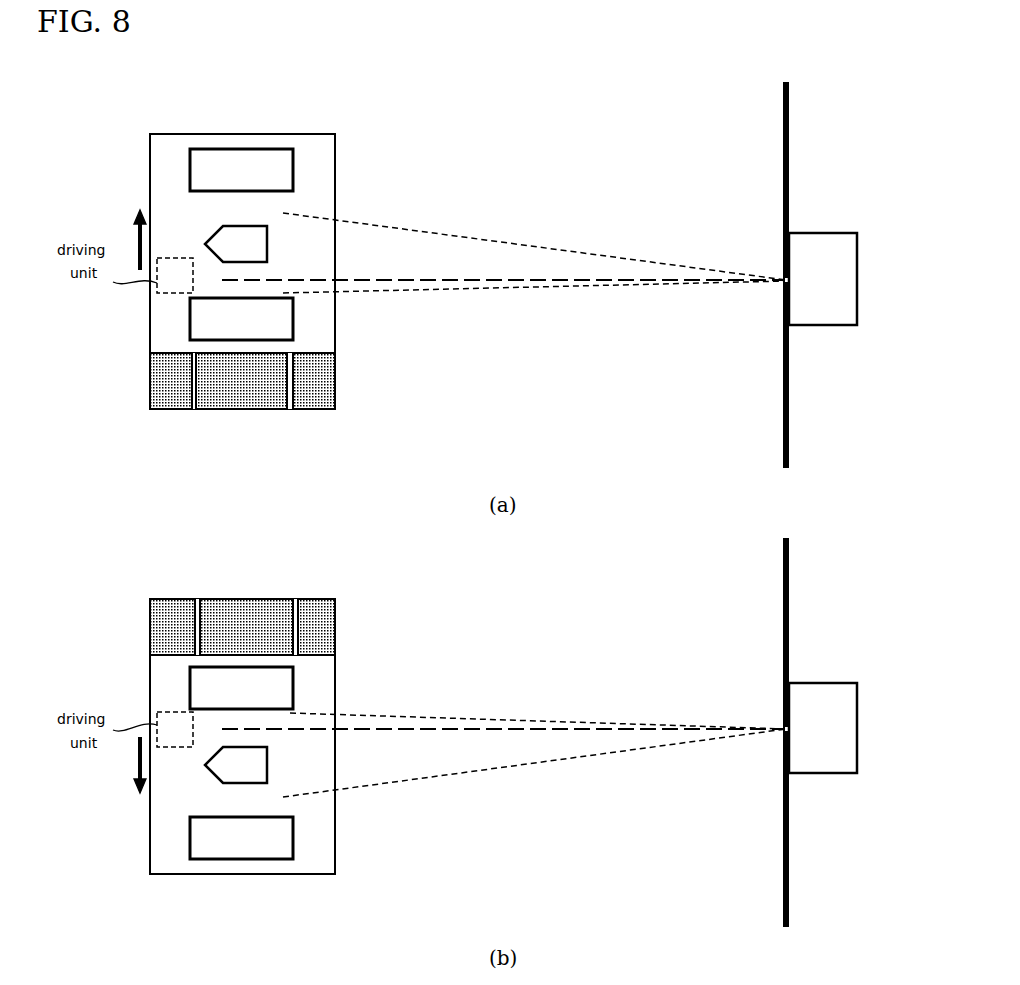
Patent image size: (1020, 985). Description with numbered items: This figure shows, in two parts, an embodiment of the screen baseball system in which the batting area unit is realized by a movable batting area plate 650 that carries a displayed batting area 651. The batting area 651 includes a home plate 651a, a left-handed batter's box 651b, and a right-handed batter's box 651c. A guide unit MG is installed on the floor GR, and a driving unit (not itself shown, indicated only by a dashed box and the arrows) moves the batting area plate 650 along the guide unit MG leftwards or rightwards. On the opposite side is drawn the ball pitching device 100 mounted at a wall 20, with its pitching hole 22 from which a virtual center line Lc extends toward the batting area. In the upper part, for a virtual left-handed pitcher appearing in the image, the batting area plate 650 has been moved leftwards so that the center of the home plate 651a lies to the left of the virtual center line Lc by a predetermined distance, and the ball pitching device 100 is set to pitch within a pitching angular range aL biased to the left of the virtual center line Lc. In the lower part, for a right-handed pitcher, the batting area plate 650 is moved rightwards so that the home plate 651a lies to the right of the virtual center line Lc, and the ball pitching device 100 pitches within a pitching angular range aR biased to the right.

The wall 20 is at (789, 161).
The target point on wall 22 is at (778, 279).
The ball pitching device 100 is at (857, 273).
The batting area plate 650 is at (335, 322).
The batting area 651 is at (310, 163).
The home plate 651a is at (267, 247).
The left-handed batter's box 651b is at (190, 170).
The right-handed batter's box 651c is at (190, 318).
The floor GR is at (165, 382).
The guide unit MG is at (291, 409).
The virtual center line Lc is at (493, 503).
The pitching angular range aL is at (648, 312).
The pitching angular range aR is at (646, 778).